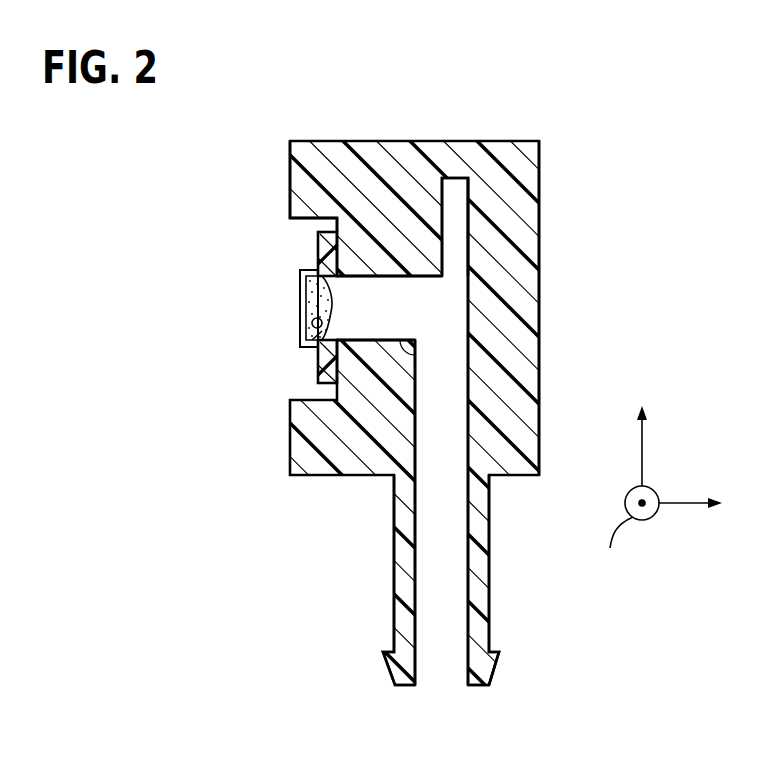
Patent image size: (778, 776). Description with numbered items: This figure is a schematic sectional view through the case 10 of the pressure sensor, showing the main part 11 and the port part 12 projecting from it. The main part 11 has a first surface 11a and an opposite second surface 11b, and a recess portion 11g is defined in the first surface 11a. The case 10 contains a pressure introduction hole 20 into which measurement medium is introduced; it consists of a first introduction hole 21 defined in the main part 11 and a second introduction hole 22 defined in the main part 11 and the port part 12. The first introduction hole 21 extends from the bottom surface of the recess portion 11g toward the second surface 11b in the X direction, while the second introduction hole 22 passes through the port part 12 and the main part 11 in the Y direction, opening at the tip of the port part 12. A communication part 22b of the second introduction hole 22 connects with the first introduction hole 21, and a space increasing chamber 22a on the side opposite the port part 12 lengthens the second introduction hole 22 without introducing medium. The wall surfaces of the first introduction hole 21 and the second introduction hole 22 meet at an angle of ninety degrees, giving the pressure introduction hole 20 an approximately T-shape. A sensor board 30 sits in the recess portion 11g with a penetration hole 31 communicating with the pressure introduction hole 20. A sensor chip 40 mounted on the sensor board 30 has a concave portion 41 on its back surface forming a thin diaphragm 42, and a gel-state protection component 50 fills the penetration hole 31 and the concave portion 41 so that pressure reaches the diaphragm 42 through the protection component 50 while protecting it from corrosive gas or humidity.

The case 10 is at (452, 128).
The main part 11 is at (518, 282).
The first surface 11a is at (290, 205).
The second surface 11b is at (540, 218).
The recess portion 11g is at (302, 219).
The port part 12 is at (480, 572).
The pressure introduction hole 20 is at (443, 727).
The first introduction hole 21 is at (357, 312).
The second introduction hole 22 is at (440, 600).
The space increasing chamber 22a is at (457, 192).
The communication part 22b is at (425, 313).
The sensor board 30 is at (327, 242).
The penetration hole 31 is at (318, 356).
The sensor chip 40 is at (307, 333).
The concave portion 41 is at (320, 332).
The diaphragm 42 is at (308, 307).
The protection component 50 is at (312, 292).